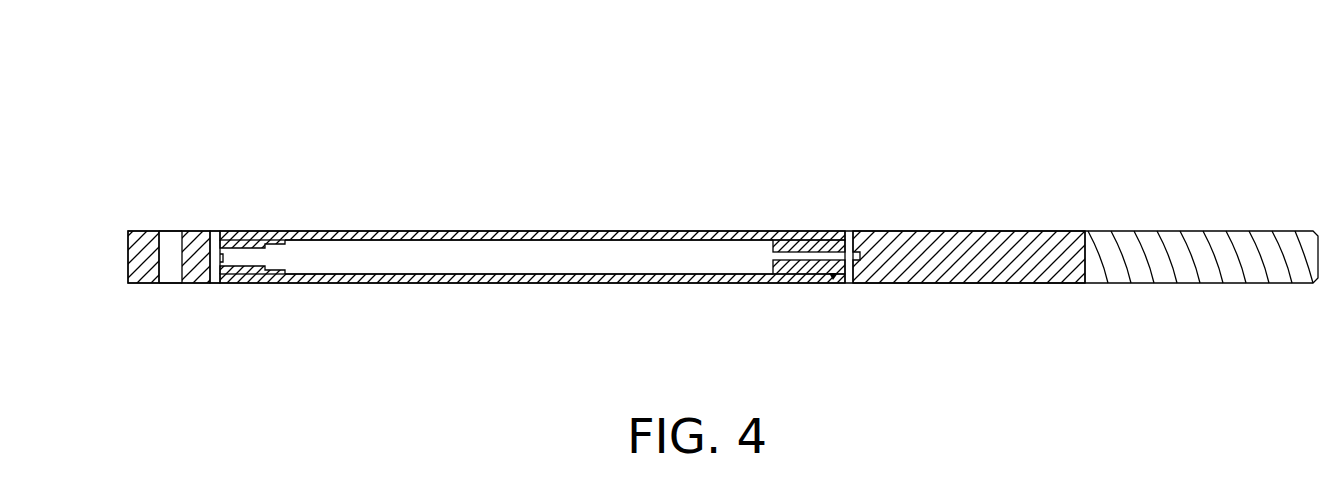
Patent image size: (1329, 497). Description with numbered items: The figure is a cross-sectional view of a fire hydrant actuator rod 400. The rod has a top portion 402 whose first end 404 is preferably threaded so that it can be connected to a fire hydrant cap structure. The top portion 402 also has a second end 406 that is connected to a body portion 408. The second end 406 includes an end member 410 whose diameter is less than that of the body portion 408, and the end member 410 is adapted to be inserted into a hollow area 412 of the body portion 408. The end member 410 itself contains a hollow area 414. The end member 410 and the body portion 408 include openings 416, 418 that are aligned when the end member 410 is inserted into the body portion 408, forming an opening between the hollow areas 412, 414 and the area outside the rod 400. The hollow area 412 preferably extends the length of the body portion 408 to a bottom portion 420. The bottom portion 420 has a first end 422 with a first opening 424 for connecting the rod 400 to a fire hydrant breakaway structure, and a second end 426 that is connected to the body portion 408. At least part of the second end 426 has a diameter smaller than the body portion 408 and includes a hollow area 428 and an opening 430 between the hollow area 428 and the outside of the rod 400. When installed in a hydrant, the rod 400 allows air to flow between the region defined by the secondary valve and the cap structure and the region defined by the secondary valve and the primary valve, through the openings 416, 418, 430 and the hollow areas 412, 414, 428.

The fire hydrant actuator rod 400 is at (618, 104).
The top portion 402 is at (1078, 231).
The first end 404 is at (1197, 231).
The second end 406 is at (938, 231).
The body portion 408 is at (542, 282).
The end member 410 is at (797, 240).
The hollow area 412 is at (622, 258).
The hollow area 414 is at (792, 284).
The opening 416 is at (823, 284).
The opening 418 is at (834, 284).
The bottom portion 420 is at (138, 229).
The first end 422 is at (150, 274).
The first opening 424 is at (167, 284).
The second end 426 is at (187, 230).
The hollow area 428 is at (250, 258).
The opening 430 is at (215, 230).